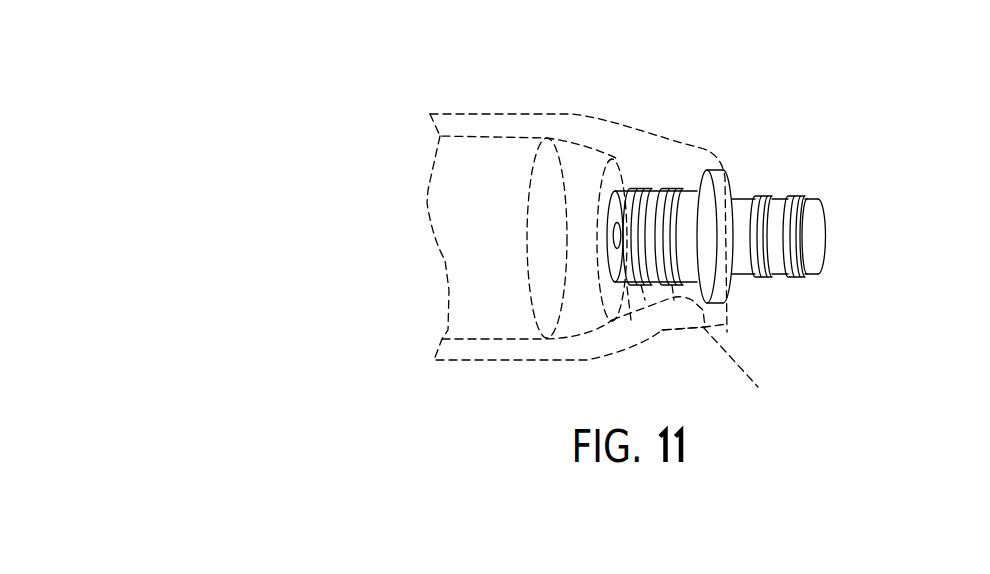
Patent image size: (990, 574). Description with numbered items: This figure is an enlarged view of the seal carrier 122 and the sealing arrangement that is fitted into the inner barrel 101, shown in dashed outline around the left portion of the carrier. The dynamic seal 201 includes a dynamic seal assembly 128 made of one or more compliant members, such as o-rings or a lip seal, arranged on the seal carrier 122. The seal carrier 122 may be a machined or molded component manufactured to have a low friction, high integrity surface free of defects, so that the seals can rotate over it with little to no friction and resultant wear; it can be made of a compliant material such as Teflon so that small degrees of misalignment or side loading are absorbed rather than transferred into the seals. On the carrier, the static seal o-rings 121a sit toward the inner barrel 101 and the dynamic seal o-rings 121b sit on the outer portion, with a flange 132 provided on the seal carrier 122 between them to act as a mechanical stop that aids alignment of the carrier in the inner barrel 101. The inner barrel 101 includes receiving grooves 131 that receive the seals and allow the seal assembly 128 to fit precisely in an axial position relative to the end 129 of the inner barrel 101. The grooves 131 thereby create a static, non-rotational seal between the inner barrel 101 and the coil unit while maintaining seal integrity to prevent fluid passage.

The inner barrel 101 is at (492, 113).
The static seal o-rings 121a is at (675, 190).
The dynamic seal o-rings 121b is at (795, 276).
The seal carrier 122 is at (743, 208).
The dynamic seal assembly 128 is at (802, 152).
The end of inner barrel 129 is at (767, 393).
The receiving grooves 131 is at (642, 285).
The flange 132 is at (697, 282).
The dynamic seal 201 is at (828, 231).